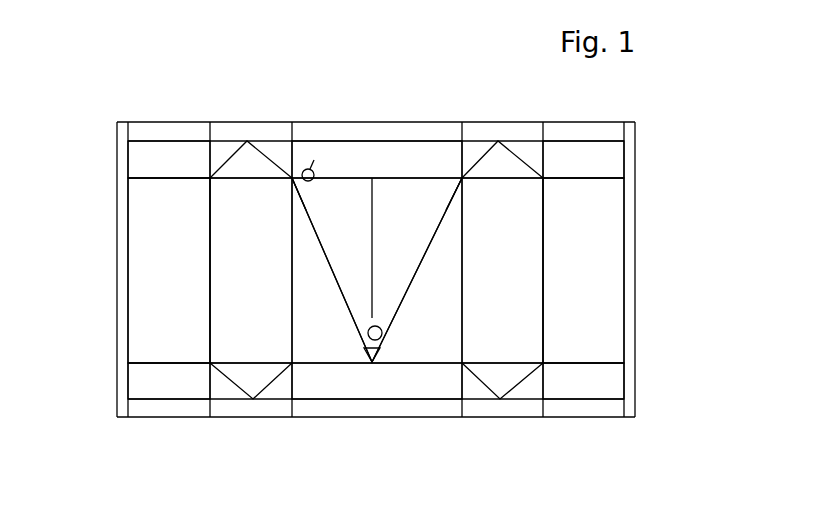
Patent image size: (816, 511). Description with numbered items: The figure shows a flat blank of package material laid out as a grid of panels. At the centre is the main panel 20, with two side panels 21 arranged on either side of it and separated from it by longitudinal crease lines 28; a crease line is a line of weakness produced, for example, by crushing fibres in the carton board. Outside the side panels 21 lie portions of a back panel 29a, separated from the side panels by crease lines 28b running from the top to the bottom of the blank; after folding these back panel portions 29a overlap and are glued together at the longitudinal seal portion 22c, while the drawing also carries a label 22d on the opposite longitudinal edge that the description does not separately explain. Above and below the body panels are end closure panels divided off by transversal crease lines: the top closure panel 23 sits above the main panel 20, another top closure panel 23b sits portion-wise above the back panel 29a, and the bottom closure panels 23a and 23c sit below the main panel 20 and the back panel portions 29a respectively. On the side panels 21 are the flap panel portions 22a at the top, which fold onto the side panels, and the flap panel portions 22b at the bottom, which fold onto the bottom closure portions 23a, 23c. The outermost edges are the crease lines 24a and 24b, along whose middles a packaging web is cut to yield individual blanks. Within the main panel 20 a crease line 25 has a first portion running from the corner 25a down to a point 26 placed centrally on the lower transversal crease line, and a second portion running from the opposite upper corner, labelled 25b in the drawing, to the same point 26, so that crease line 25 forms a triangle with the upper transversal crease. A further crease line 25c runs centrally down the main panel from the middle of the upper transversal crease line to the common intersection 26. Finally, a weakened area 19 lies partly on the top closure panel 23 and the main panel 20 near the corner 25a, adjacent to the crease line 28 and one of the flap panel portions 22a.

The weakened area 19 is at (320, 165).
The main panel 20 is at (369, 334).
The side panel 21 is at (258, 336).
The flap panel portion 22a is at (243, 140).
The flap panel portion 22b is at (247, 388).
The longitudinal seal portion 22c is at (117, 273).
The right side wall 22d is at (635, 267).
The top closure panel 23 is at (405, 170).
The bottom closure panel 23a is at (377, 381).
The top closure panel 23b is at (185, 175).
The bottom closure panel 23c is at (376, 381).
The crease line 24a is at (352, 130).
The crease line 24b is at (330, 410).
The crease line 25 is at (343, 297).
The corner 25a is at (287, 184).
The right guide end 25b is at (455, 181).
The crease line 25c is at (371, 232).
The point 26 is at (370, 365).
The crease line 28 is at (296, 247).
The crease line 28b is at (215, 263).
The back panel 29a is at (180, 318).